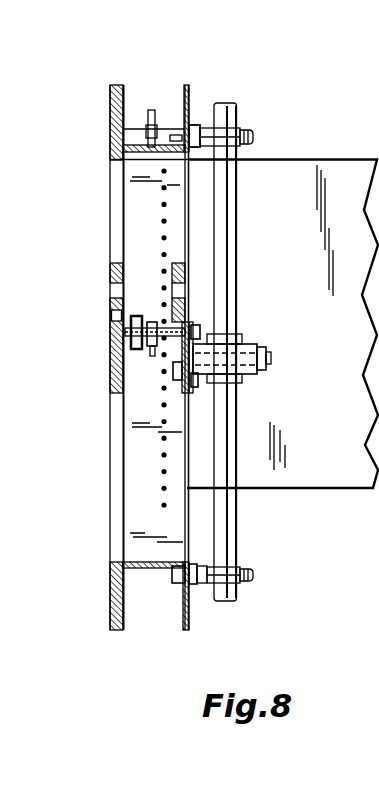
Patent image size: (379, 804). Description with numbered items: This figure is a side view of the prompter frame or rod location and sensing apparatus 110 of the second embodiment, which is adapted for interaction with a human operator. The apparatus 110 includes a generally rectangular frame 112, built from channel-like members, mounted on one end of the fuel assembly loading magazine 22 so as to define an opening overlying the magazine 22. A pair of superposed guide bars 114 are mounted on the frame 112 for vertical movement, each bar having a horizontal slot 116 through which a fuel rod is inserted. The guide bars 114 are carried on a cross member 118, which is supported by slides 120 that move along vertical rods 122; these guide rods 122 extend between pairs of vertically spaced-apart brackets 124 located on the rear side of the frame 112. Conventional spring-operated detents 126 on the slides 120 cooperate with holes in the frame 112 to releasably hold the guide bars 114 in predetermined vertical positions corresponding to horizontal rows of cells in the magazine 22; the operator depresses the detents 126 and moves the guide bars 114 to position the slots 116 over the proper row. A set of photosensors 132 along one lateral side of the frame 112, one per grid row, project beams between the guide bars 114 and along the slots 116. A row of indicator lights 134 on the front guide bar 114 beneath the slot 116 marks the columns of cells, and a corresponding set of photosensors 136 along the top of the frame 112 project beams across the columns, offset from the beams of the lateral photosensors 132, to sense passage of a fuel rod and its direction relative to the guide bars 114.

The fuel assembly loading magazine 22 is at (331, 479).
The rod location and sensing apparatus 110 is at (257, 75).
The frame 112 is at (187, 94).
The guide bars 114 is at (112, 268).
The horizontal slot 116 is at (112, 289).
The cross member 118 is at (192, 327).
The slides 120 is at (246, 382).
The vertical rods 122 is at (228, 202).
The brackets 124 is at (255, 138).
The spring-operated detents 126 is at (271, 360).
The photosensors 132 is at (162, 439).
The indicator lights 134 is at (110, 317).
The photosensors 136 is at (150, 124).